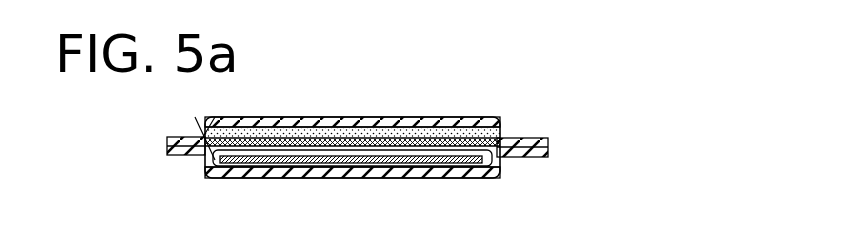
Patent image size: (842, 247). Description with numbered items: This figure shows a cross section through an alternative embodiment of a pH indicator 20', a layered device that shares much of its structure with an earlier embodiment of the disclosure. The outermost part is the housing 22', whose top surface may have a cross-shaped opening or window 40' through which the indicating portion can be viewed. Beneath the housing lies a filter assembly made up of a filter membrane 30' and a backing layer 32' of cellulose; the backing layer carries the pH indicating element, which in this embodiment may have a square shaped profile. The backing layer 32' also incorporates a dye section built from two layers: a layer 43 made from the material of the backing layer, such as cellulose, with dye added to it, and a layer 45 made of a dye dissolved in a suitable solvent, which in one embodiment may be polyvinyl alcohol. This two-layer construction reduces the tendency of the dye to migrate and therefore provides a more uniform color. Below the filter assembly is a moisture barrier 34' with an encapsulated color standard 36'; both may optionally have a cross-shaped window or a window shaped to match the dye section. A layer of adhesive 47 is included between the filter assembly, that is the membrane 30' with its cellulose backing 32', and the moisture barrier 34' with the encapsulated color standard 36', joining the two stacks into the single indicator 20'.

The pH indicator 20' is at (442, 109).
The housing 22' is at (379, 94).
The filter membrane 30' is at (352, 111).
The backing layer 32' is at (560, 135).
The moisture barrier 34' is at (389, 185).
The color standard 36' is at (352, 190).
The window 40' is at (352, 99).
The layer 43 is at (316, 131).
The layer 45 is at (365, 144).
The layer of adhesive 47 is at (212, 130).